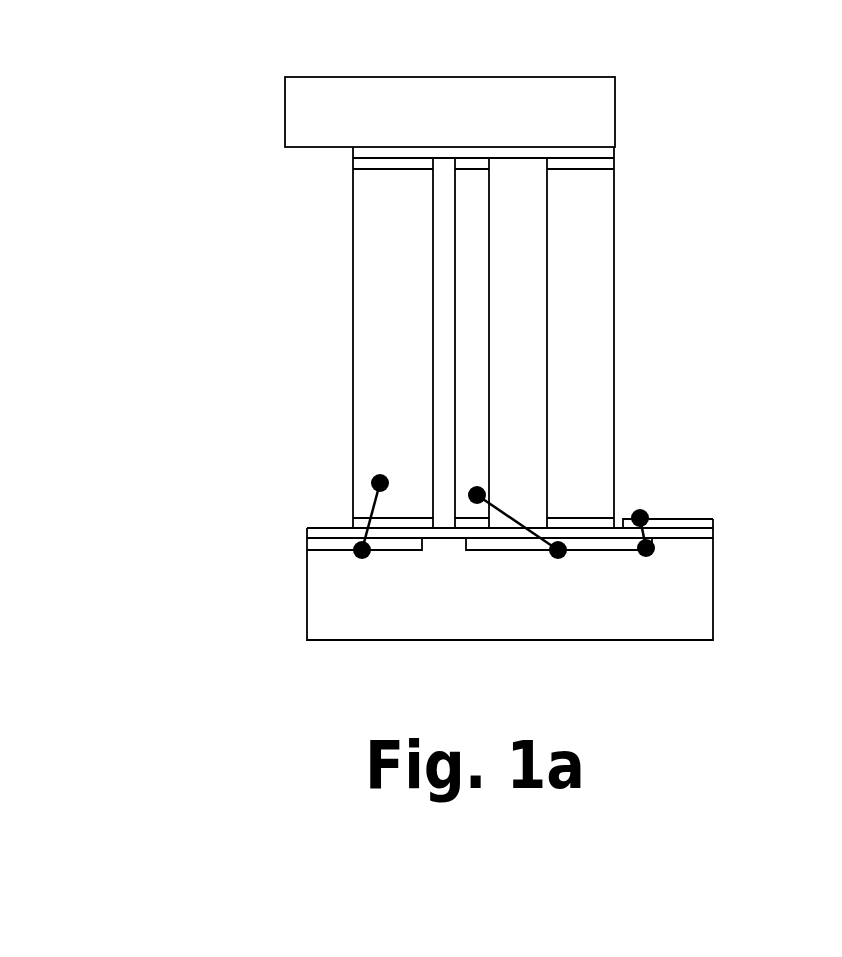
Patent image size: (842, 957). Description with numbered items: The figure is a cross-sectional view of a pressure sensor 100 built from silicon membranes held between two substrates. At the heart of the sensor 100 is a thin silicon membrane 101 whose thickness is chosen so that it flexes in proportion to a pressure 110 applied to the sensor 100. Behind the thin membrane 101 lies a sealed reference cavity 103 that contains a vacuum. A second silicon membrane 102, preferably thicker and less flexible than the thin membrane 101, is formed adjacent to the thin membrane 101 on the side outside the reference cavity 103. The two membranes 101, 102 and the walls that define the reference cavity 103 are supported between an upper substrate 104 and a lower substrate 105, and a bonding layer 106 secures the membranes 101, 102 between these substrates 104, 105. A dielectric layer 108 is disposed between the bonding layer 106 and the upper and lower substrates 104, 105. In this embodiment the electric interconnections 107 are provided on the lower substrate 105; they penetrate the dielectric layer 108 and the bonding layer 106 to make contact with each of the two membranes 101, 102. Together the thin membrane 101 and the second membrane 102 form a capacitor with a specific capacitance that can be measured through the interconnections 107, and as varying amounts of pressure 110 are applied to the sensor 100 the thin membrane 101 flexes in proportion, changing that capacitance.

The pressure sensor 100 is at (262, 182).
The thin silicon membrane 101 is at (481, 292).
The second silicon membrane 102 is at (365, 306).
The reference cavity 103 is at (524, 423).
The upper substrate 104 is at (471, 125).
The lower substrate 105 is at (534, 625).
The bonding layer 106 is at (457, 514).
The electric interconnections 107 is at (503, 495).
The dielectric layer 108 is at (708, 543).
The pressure 110 is at (325, 512).